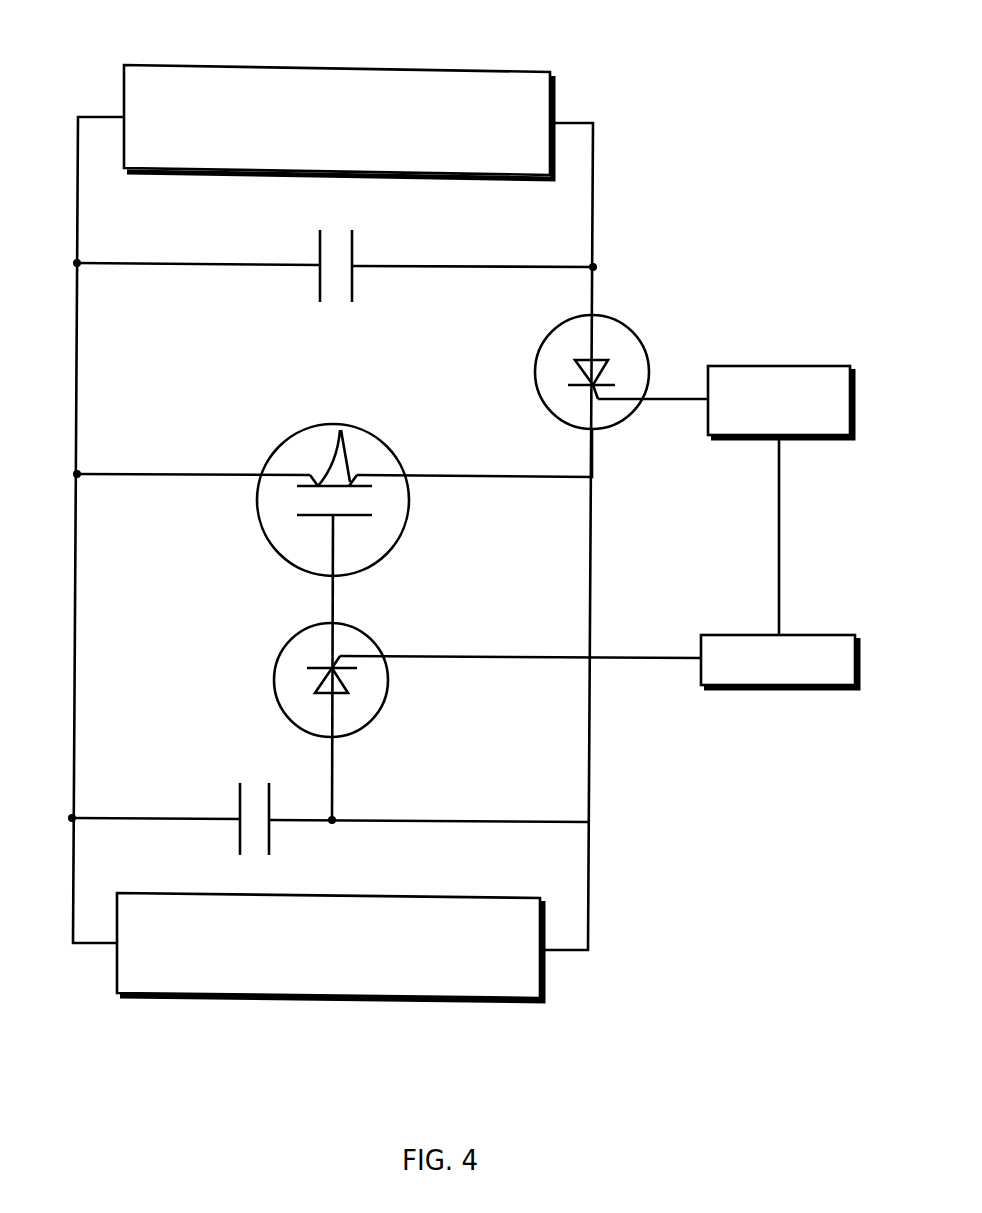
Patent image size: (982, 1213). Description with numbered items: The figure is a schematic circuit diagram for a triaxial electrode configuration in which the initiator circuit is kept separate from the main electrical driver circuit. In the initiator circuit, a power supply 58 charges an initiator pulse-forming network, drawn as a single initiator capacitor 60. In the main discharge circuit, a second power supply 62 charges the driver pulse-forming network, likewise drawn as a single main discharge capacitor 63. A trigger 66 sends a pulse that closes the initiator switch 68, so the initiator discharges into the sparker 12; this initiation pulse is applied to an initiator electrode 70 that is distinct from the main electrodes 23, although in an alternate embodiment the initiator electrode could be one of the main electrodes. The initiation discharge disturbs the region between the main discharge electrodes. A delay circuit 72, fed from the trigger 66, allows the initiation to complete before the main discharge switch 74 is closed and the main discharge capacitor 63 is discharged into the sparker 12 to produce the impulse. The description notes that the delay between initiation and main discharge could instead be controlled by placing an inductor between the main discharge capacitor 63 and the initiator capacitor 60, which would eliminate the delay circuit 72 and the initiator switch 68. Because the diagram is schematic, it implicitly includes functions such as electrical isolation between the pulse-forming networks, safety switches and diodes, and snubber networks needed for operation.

The power supply 62 is at (515, 68).
The main discharge capacitor 63 is at (352, 284).
The main discharge switch 74 is at (617, 320).
The delay circuit 72 is at (803, 366).
The sparker 12 is at (344, 488).
The main electrodes 23 is at (340, 430).
The initiator electrode 70 is at (310, 517).
The initiator switch 68 is at (385, 700).
The trigger 66 is at (822, 635).
The initiator capacitor 60 is at (240, 800).
The power supply 58 is at (515, 1003).